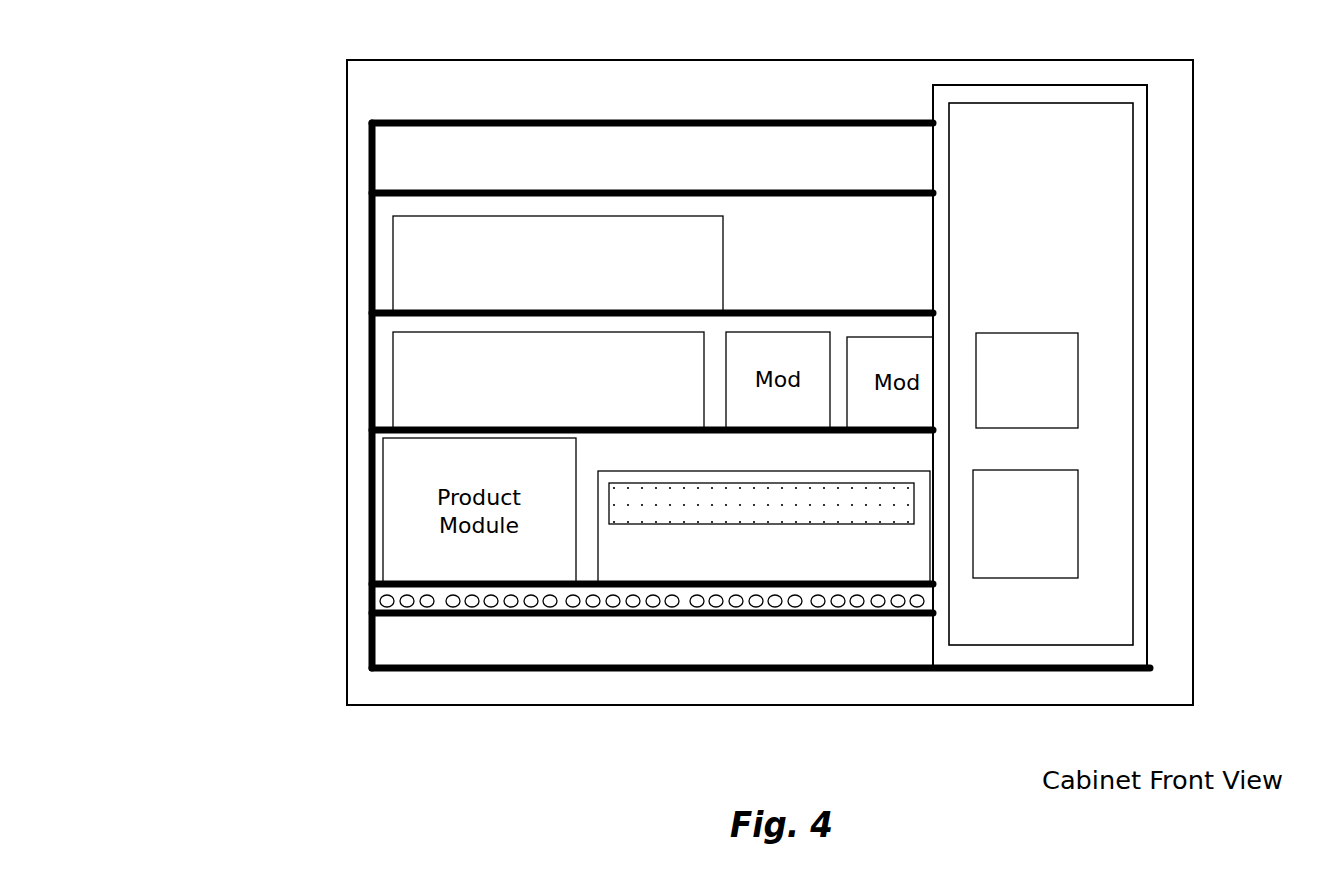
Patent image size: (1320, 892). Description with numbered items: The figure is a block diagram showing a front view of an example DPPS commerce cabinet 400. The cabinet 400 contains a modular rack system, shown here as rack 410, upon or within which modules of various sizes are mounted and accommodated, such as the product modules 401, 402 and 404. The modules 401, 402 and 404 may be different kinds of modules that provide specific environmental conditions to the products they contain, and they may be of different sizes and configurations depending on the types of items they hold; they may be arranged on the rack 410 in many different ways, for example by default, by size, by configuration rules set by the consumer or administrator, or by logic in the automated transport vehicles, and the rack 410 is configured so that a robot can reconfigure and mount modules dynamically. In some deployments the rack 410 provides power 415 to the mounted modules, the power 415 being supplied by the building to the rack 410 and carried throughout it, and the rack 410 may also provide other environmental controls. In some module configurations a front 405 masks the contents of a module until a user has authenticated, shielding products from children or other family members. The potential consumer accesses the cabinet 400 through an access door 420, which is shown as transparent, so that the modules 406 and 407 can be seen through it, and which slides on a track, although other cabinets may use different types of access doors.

The commerce cabinet 400 is at (770, 382).
The product module 401 is at (393, 276).
The product module 402 is at (393, 378).
The product module 404 is at (764, 527).
The front 405 is at (761, 503).
The module 406 is at (1027, 380).
The module 407 is at (1025, 524).
The rack 410 is at (372, 178).
The power 415 is at (382, 603).
The access door 420 is at (1141, 143).